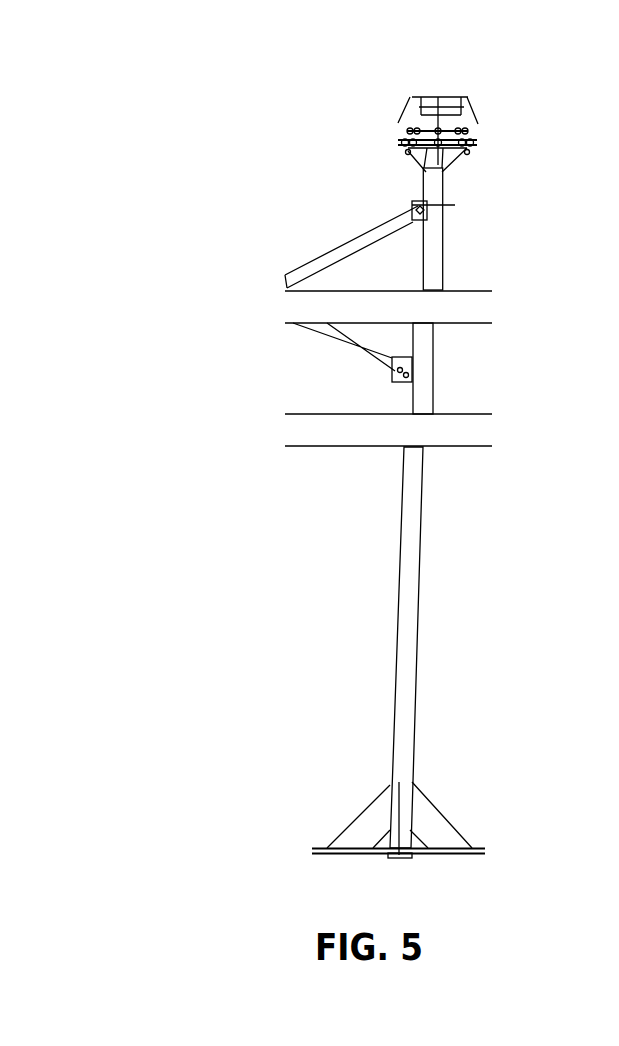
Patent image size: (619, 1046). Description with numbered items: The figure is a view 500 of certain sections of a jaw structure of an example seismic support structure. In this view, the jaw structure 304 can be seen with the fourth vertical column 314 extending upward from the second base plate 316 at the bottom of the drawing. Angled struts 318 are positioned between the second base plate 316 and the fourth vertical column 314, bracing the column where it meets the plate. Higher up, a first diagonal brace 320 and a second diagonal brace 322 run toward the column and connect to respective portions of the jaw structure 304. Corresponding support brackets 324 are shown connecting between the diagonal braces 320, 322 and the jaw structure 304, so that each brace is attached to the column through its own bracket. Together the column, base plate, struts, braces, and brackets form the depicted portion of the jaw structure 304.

The utility pole system 500 is at (450, 54).
The jaw structure 304 is at (435, 511).
The fourth vertical column 314 is at (413, 698).
The second base plate 316 is at (413, 847).
The angled struts 318 is at (362, 772).
The first diagonal brace 320 is at (358, 347).
The second diagonal brace 322 is at (322, 258).
The support brackets 324 is at (420, 206).